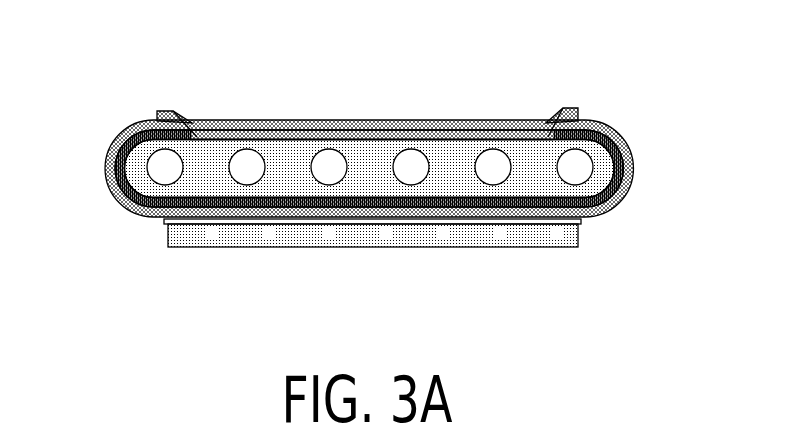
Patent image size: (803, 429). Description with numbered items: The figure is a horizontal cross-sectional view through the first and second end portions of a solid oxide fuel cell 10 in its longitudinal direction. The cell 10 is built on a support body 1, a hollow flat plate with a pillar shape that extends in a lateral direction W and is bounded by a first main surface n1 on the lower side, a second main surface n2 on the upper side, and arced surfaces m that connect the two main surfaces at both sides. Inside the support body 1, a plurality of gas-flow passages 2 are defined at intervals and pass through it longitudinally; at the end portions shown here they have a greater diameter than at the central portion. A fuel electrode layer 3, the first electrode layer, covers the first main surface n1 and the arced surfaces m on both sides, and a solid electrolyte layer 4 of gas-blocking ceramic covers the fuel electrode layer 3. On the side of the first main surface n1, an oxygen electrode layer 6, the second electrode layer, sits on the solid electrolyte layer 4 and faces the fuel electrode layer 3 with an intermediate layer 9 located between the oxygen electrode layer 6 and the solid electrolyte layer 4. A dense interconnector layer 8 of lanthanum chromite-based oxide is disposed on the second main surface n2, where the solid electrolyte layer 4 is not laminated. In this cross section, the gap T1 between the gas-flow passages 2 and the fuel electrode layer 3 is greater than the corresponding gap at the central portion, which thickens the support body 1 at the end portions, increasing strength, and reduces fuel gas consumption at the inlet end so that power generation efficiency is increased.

The support body 1 is at (282, 186).
The gas-flow passages 2 is at (314, 170).
The fuel electrode layer 3 is at (384, 183).
The solid electrolyte layer 4 is at (106, 189).
The oxygen electrode layer 6 is at (492, 232).
The interconnector layer 8 is at (360, 128).
The intermediate layer 9 is at (387, 224).
The cell 10 is at (612, 123).
The arced surfaces m is at (125, 172).
The first main surface n1 is at (360, 198).
The second main surface n2 is at (445, 135).
The gap T1 is at (572, 187).
The lateral direction W is at (476, 90).